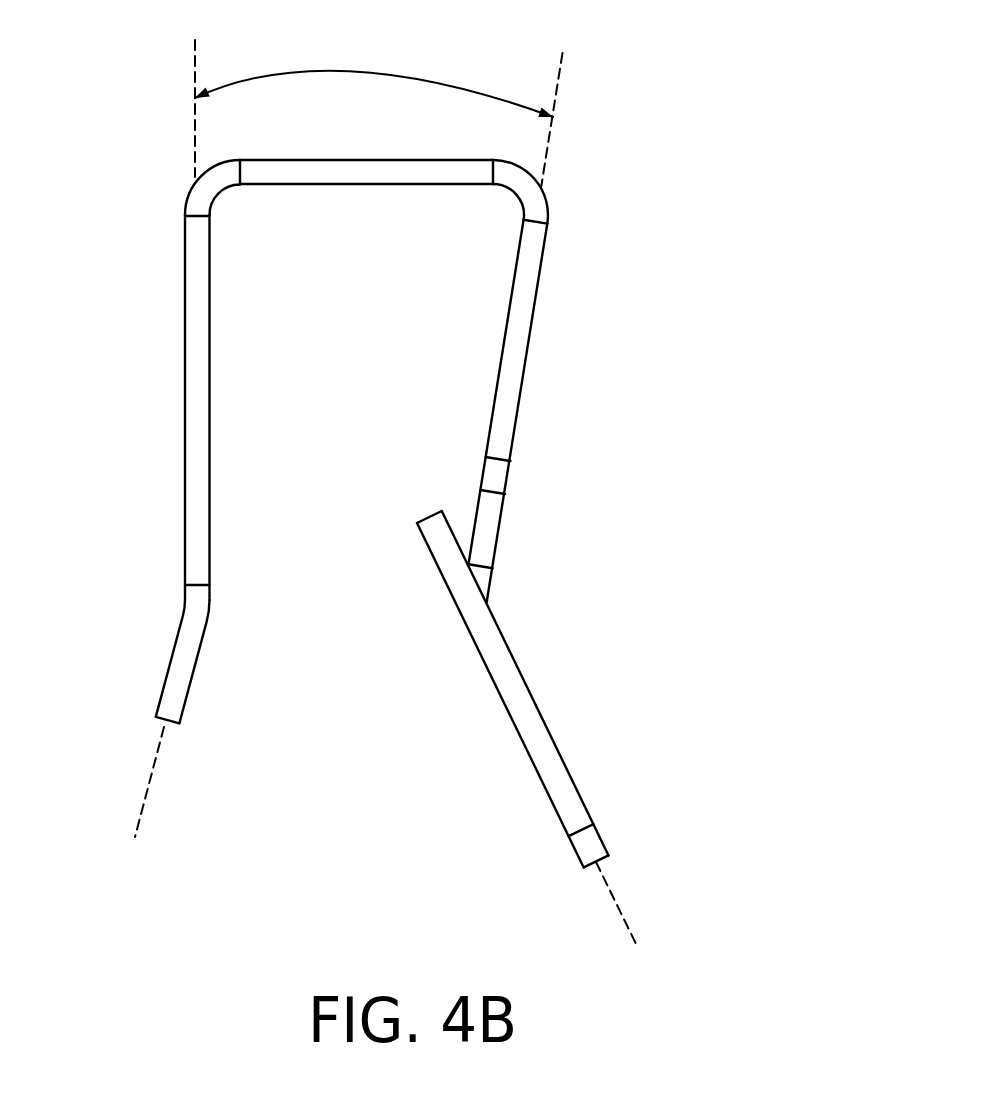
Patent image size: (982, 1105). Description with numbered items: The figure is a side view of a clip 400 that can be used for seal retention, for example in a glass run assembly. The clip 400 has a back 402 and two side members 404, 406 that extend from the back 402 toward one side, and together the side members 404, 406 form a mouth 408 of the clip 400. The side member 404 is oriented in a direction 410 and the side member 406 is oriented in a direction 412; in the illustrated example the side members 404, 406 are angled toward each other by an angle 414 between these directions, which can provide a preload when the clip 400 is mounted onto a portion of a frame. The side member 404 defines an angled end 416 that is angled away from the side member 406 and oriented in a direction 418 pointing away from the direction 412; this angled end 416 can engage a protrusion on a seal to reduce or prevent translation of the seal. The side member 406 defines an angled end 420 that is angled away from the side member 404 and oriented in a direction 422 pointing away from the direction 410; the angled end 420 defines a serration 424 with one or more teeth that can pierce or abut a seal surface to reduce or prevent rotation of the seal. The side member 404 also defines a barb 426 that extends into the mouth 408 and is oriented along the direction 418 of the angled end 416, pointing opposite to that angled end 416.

The clip 400 is at (703, 70).
The back 402 is at (355, 160).
The side member 404 is at (523, 362).
The side member 406 is at (183, 362).
The mouth 408 is at (337, 672).
The direction 410 is at (562, 72).
The direction 412 is at (193, 62).
The angle 414 is at (377, 72).
The angled end 416 is at (545, 720).
The direction 418 is at (618, 903).
The angled end 420 is at (170, 657).
The direction 422 is at (162, 742).
The serration 424 is at (115, 777).
The barb 426 is at (425, 515).